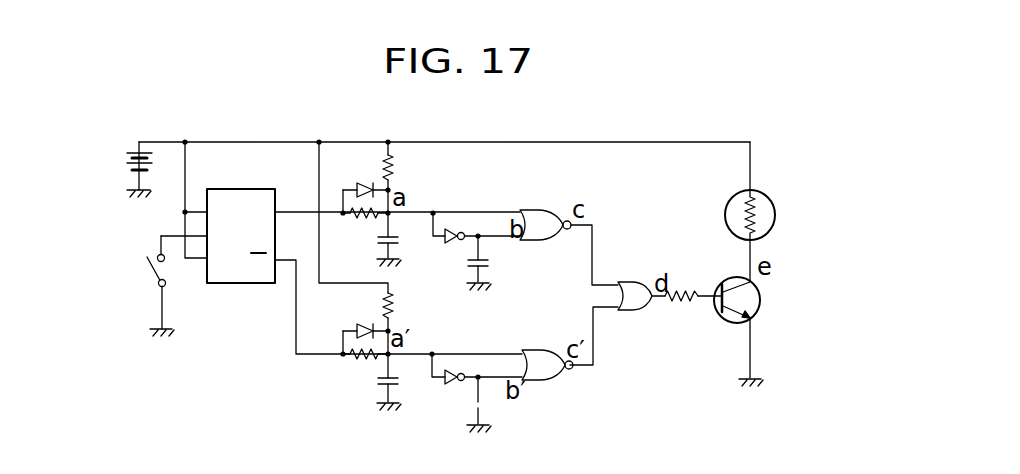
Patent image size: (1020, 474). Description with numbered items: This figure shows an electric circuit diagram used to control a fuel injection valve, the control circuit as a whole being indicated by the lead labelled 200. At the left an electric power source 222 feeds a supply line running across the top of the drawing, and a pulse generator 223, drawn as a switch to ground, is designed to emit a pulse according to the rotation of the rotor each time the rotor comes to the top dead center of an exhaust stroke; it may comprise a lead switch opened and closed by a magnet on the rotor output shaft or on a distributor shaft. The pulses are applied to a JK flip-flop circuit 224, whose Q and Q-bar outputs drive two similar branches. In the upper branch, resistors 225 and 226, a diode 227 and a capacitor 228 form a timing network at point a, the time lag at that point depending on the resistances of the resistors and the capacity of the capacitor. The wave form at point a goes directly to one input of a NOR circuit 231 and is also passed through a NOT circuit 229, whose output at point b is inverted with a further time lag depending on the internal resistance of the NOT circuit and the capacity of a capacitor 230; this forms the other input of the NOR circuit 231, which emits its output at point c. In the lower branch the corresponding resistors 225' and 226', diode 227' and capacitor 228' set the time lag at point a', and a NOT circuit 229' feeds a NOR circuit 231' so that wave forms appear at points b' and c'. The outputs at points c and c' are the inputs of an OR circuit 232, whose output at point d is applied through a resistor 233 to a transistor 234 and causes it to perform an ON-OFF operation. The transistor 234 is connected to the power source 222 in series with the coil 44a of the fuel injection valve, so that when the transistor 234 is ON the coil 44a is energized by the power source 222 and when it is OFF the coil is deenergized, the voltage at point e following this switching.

The lamp control circuit 200 is at (290, 141).
The electric power source 222 is at (124, 157).
The pulse generator 223 is at (150, 272).
The JK flip-flop circuit 224 is at (233, 284).
The resistor 225 is at (359, 236).
The resistor 226 is at (424, 167).
The diode 227 is at (359, 169).
The capacitor 228 is at (420, 258).
The NOT circuit 229 is at (468, 207).
The capacitor 230 is at (492, 265).
The NOR circuit 231 is at (545, 198).
The resistor 225' is at (348, 375).
The resistor 226' is at (424, 309).
The diode 227' is at (350, 314).
The capacitor 228' is at (420, 406).
The NOT circuit 229' is at (475, 354).
The NOR circuit 231' is at (541, 348).
The OR circuit 232 is at (628, 282).
The resistor 233 is at (688, 305).
The transistor 234 is at (757, 308).
The coil 44a is at (775, 207).